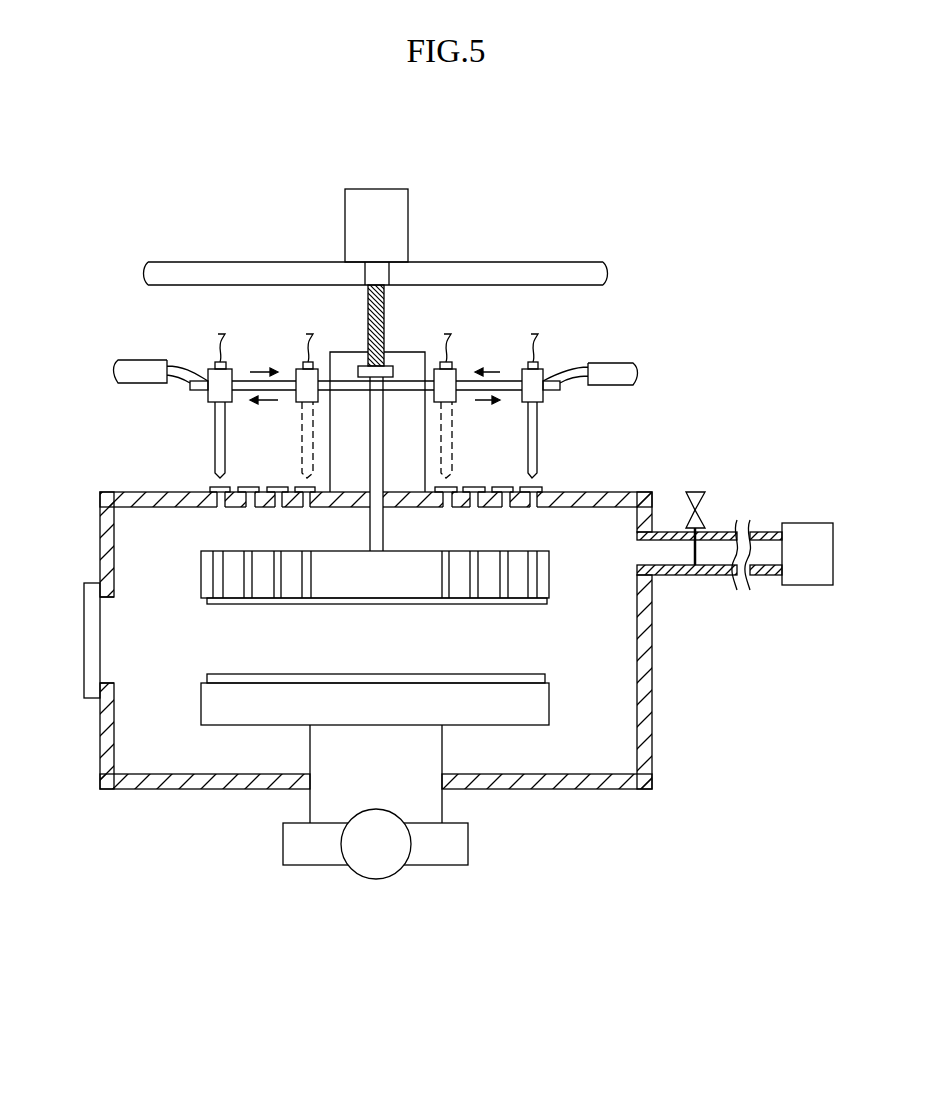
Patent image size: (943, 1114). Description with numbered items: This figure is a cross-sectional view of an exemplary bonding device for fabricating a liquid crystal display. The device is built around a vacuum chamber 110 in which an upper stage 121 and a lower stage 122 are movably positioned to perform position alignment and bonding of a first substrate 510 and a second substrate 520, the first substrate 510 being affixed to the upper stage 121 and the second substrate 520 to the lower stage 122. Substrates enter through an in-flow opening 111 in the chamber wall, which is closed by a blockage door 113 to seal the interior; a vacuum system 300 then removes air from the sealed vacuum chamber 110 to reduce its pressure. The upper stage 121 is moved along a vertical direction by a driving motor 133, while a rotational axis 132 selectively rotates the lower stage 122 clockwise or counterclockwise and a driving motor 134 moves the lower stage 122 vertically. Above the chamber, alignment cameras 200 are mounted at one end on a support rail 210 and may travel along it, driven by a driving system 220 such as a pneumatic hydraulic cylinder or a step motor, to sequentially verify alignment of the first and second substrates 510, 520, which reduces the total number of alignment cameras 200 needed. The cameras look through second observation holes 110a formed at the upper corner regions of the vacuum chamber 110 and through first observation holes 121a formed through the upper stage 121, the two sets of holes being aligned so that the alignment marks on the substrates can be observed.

The vacuum chamber 110 is at (612, 500).
The second observation holes 110a is at (504, 508).
The in-flow opening 111 is at (106, 645).
The blockage door 113 is at (90, 585).
The upper stage 121 is at (388, 590).
The first observation holes 121a is at (503, 572).
The lower stage 122 is at (538, 703).
The rotational axis 132 is at (433, 808).
The driving motor 133 is at (401, 217).
The driving motor 134 is at (372, 875).
The alignment cameras 200 is at (549, 432).
The support rail 210 is at (468, 382).
The driving system 220 is at (612, 363).
The vacuum system 300 is at (812, 516).
The first substrate 510 is at (488, 680).
The second substrate 520 is at (298, 604).